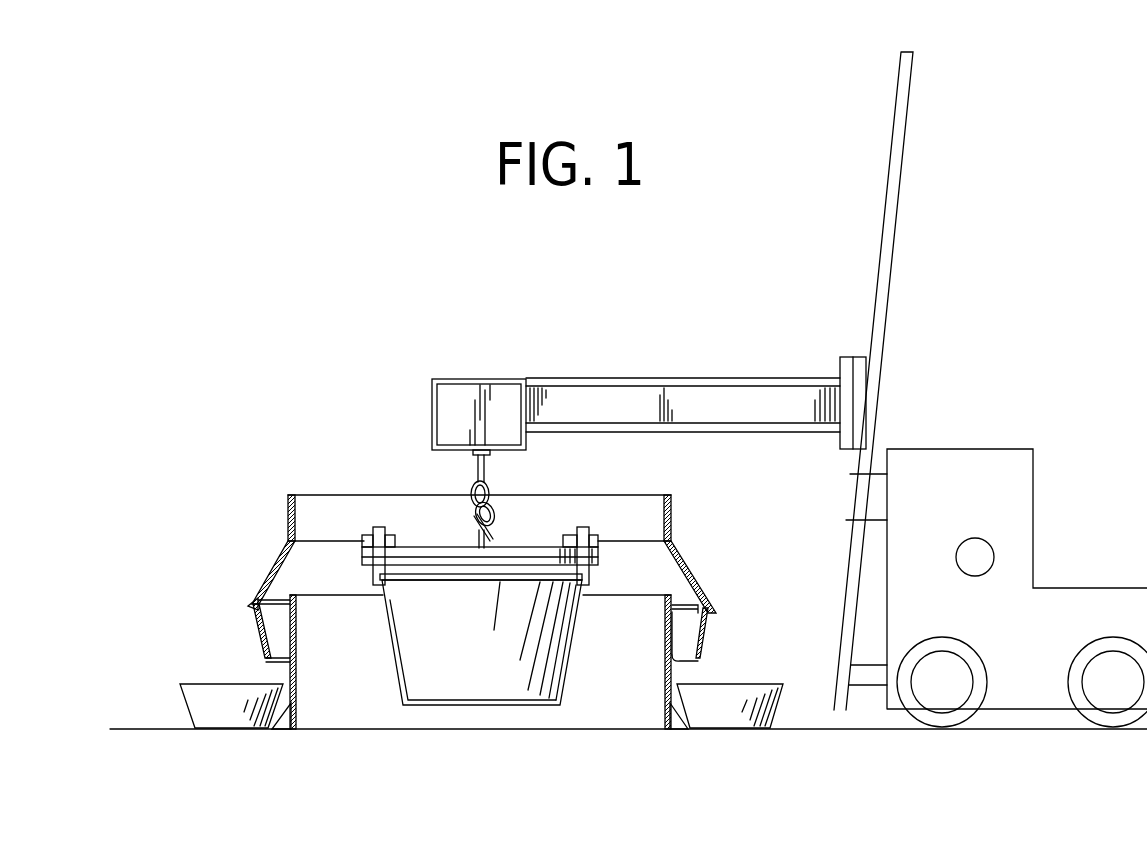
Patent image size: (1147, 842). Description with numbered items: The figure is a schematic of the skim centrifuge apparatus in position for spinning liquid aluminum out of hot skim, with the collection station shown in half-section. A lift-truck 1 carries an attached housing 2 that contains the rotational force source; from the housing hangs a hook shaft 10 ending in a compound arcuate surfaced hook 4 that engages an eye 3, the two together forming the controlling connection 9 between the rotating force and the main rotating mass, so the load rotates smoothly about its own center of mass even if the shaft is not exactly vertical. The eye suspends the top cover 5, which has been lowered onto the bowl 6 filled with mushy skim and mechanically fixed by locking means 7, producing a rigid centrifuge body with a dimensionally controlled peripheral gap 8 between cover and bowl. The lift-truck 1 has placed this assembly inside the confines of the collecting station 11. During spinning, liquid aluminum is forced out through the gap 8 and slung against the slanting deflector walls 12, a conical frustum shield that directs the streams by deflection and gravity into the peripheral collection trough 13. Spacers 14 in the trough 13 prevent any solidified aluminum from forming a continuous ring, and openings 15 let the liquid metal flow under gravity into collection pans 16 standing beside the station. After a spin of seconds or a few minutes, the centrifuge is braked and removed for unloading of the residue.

The lift-truck 1 is at (996, 456).
The housing 2 is at (488, 388).
The eye 3 is at (470, 485).
The hook 4 is at (492, 510).
The top cover 5 is at (598, 562).
The bowl 6 is at (454, 706).
The locking means 7 is at (590, 534).
The peripheral gap 8 is at (418, 574).
The controlling connection 9 is at (471, 506).
The hook shaft 10 is at (487, 462).
The collecting station 11 is at (671, 512).
The slanting deflector walls 12 is at (264, 582).
The peripheral collection trough 13 is at (707, 626).
The spacers 14 is at (690, 612).
The openings 15 is at (296, 666).
The collection pans 16 is at (207, 686).